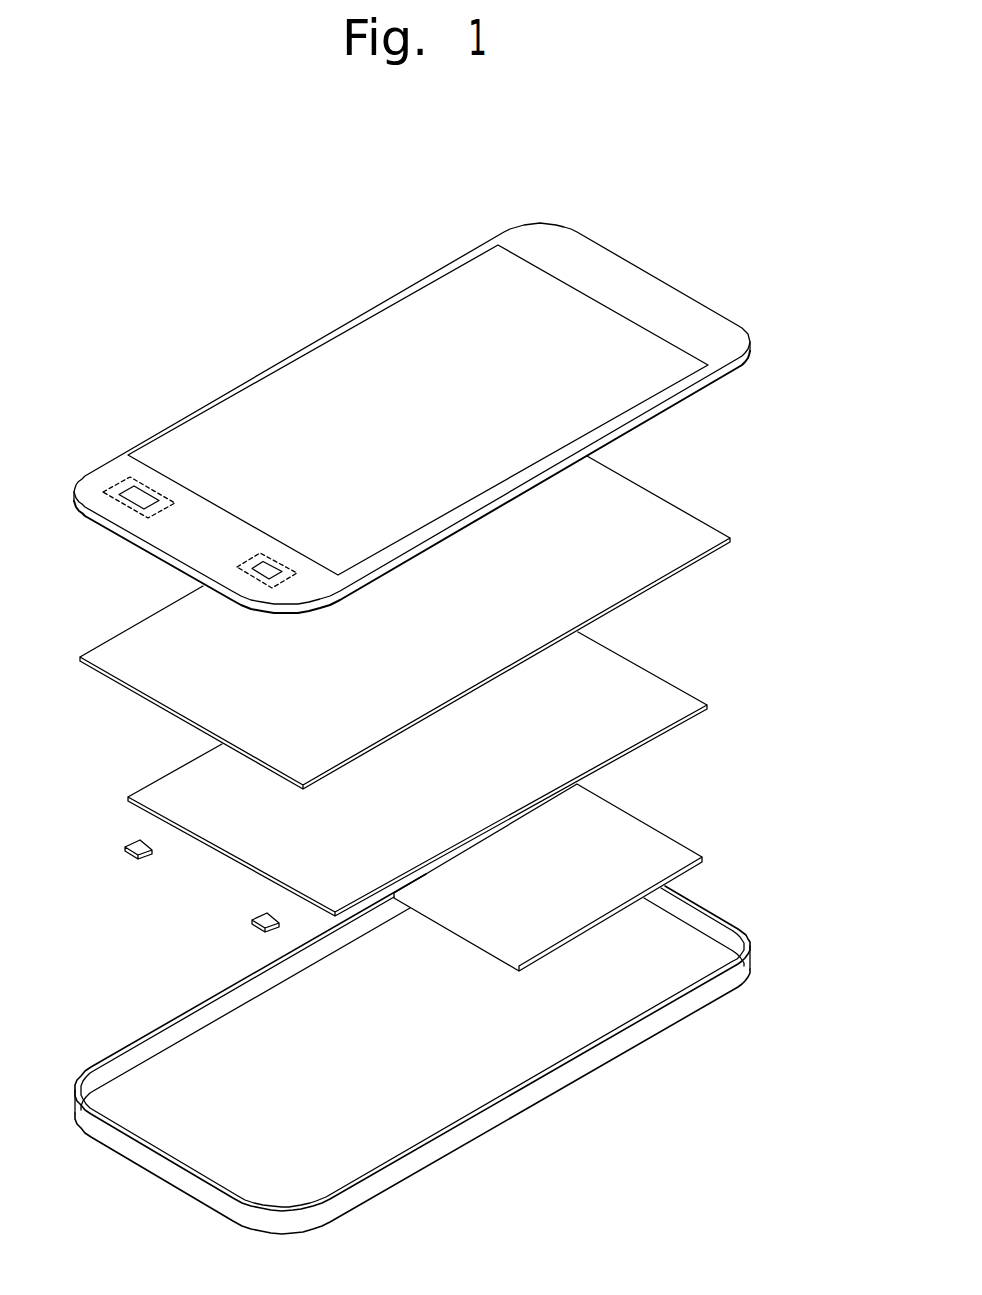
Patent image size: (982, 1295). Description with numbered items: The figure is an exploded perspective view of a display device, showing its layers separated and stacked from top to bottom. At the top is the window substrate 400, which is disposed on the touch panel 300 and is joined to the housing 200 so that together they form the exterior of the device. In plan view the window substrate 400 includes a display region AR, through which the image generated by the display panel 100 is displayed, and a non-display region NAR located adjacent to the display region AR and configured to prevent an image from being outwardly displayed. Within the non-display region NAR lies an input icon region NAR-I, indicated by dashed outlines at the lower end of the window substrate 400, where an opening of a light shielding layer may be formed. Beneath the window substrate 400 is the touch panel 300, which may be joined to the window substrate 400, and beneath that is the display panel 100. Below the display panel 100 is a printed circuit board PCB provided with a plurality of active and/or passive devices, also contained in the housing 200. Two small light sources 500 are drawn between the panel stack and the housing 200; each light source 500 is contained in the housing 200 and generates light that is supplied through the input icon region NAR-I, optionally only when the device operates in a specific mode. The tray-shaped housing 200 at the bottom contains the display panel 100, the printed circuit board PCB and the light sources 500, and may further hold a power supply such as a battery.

The window substrate 400 is at (397, 401).
The non-display region NAR is at (594, 270).
The display region AR is at (416, 323).
The input icon region NAR-I is at (120, 484).
The touch panel 300 is at (640, 519).
The display panel 100 is at (640, 699).
The printed circuit board PCB is at (640, 844).
The light source 500 is at (133, 843).
The housing 200 is at (582, 1066).